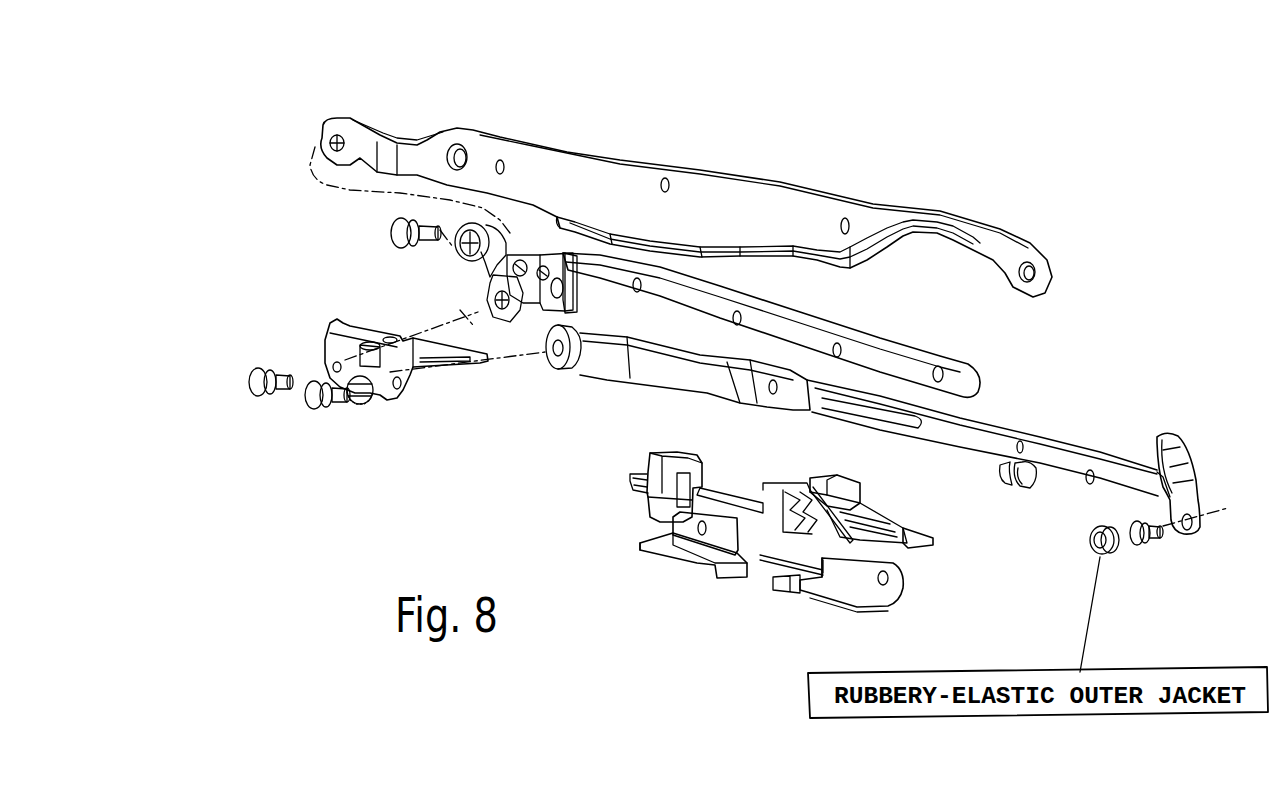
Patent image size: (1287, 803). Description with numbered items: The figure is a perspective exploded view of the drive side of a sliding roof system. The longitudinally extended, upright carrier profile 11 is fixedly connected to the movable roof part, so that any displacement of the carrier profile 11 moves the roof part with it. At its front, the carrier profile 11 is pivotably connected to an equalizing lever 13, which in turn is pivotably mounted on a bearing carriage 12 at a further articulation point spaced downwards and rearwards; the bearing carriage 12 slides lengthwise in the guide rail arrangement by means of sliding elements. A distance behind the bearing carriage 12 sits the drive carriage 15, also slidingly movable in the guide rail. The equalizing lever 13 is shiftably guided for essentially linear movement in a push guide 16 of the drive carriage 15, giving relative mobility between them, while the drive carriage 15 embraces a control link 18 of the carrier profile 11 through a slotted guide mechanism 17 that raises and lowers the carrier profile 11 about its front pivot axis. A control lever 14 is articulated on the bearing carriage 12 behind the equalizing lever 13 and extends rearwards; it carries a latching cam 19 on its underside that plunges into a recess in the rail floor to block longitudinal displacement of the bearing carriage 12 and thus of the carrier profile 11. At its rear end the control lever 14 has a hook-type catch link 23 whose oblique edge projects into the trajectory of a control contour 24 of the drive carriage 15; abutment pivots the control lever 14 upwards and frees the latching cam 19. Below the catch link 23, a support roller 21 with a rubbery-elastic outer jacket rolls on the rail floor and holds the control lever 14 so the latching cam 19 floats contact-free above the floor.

The carrier profile 11 is at (730, 197).
The control link 18 is at (740, 247).
The equalizing lever 13 is at (713, 302).
The control lever 14 is at (653, 373).
The bearing carriage 12 is at (388, 372).
The push guide 16 is at (693, 464).
The slotted guide mechanism 17 is at (822, 463).
The drive carriage 15 is at (784, 553).
The control contour 24 is at (903, 550).
The latching cam 19 is at (1032, 488).
The hook-type catch link 23 is at (1155, 459).
The support roller 21 is at (1137, 550).